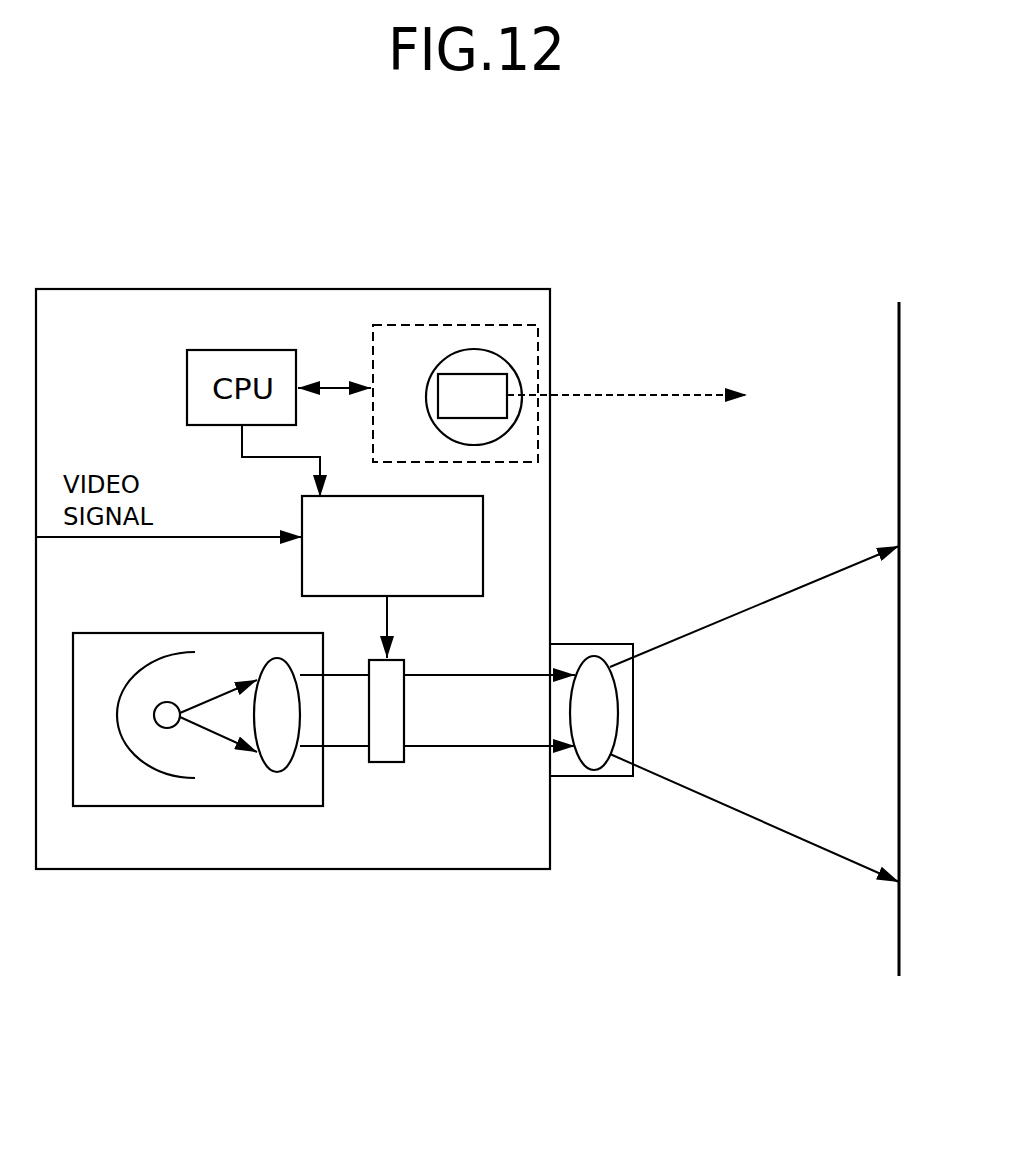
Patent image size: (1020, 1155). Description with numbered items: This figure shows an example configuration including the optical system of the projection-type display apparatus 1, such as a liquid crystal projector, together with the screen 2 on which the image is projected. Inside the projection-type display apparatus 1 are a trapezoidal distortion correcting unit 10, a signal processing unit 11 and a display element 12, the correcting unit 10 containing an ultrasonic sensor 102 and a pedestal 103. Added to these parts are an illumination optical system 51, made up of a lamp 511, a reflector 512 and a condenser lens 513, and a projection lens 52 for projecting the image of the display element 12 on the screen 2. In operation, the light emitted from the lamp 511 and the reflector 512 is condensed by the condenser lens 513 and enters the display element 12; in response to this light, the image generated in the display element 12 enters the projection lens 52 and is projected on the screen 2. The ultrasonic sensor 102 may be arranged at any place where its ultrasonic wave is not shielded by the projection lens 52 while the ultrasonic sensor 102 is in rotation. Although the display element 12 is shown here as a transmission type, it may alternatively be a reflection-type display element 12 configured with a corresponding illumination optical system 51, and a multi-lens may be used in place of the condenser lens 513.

The projection-type display apparatus 1 is at (333, 870).
The screen 2 is at (899, 333).
The trapezoidal distortion correcting unit 10 is at (373, 343).
The ultrasonic sensor 102 is at (470, 374).
The pedestal 103 is at (507, 357).
The signal processing unit 11 is at (302, 507).
The display element 12 is at (383, 762).
The illumination optical system 51 is at (280, 632).
The lamp 511 is at (157, 727).
The reflector 512 is at (127, 680).
The condenser lens 513 is at (268, 772).
The projection lens 52 is at (590, 656).